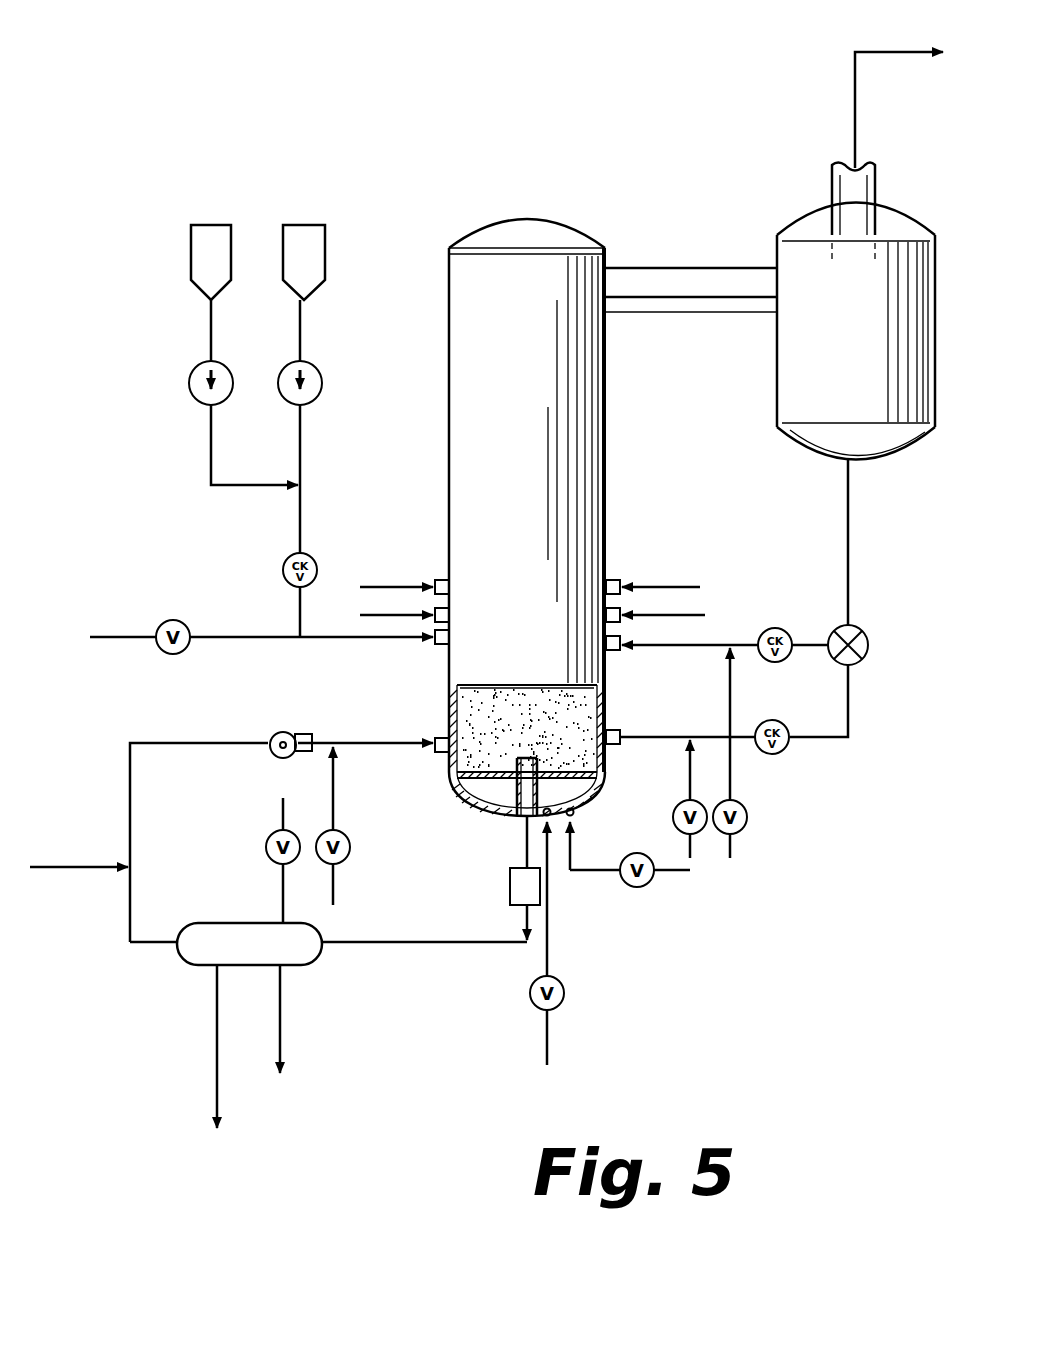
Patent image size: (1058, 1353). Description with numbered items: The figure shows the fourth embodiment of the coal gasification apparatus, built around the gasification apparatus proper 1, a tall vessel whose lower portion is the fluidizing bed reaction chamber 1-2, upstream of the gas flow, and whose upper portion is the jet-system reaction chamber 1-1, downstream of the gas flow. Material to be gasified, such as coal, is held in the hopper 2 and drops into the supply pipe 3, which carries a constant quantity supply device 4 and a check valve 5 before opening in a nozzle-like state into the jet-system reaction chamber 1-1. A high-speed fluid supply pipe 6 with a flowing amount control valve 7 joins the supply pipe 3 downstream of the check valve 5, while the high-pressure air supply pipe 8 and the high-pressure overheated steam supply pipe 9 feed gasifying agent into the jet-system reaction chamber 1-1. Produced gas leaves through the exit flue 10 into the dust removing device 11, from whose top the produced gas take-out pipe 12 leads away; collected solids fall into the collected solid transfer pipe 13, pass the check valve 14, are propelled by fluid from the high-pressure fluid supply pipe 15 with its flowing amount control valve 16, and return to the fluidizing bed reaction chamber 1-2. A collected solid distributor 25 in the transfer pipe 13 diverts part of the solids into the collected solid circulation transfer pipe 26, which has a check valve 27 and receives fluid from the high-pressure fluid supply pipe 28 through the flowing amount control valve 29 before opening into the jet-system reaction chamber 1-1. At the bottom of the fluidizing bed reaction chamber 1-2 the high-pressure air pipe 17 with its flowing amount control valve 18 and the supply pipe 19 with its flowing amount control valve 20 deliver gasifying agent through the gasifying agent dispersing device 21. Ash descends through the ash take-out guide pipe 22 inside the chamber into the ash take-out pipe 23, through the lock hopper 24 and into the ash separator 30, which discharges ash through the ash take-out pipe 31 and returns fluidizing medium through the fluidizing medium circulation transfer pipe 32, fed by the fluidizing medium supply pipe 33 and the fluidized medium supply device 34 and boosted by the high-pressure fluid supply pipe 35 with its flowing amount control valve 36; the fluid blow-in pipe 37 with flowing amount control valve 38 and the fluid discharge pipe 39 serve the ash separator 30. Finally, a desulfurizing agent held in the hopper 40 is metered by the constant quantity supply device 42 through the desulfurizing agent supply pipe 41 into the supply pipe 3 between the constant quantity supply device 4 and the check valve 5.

The gasification apparatus proper 1 is at (536, 217).
The jet-system reaction chamber 1-1 is at (525, 446).
The fluidizing bed reaction chamber 1-2 is at (482, 695).
The hopper 2 is at (325, 235).
The supply pipe 3 is at (302, 325).
The constant quantity supply device 4 is at (322, 383).
The check valve 5 is at (313, 556).
The high-speed fluid supply pipe 6 is at (260, 637).
The flowing amount control valve 7 is at (180, 620).
The high-pressure air supply pipe 8 is at (365, 612).
The high-pressure overheated steam supply pipe 9 is at (386, 586).
The exit flue 10 is at (726, 247).
The dust removing device 11 is at (912, 230).
The produced gas take-out pipe 12 is at (903, 52).
The collected solid transfer pipe 13 is at (850, 517).
The check valve 14 is at (788, 755).
The high-pressure fluid supply pipe 15 is at (688, 773).
The flowing amount control valve 16 is at (673, 820).
The high-pressure air pipe 17 is at (598, 877).
The flowing amount control valve 18 is at (646, 888).
The supply pipe 19 is at (548, 937).
The flowing amount control valve 20 is at (565, 993).
The gasifying agent dispersing device 21 is at (492, 800).
The ash take-out guide pipe 22 is at (532, 758).
The ash take-out pipe 23 is at (527, 848).
The lock hopper 24 is at (510, 900).
The collected solid distributor 25 is at (862, 635).
The collected solid circulation transfer pipe 26 is at (670, 660).
The check valve 27 is at (803, 615).
The high-pressure fluid supply pipe 28 is at (735, 690).
The flowing amount control valve 29 is at (748, 817).
The ash separator 30 is at (182, 962).
The ash take-out pipe 31 is at (215, 1065).
The fluidizing medium circulation transfer pipe 32 is at (410, 742).
The fluidizing medium supply pipe 33 is at (60, 870).
The fluidized medium supply device 34 is at (302, 725).
The high-pressure fluid supply pipe 35 is at (385, 638).
The flowing amount control valve 36 is at (352, 852).
The fluid blow-in pipe 37 is at (283, 898).
The flowing amount control valve 38 is at (266, 847).
The fluid discharge pipe 39 is at (283, 1010).
The hopper 40 is at (193, 242).
The desulfurizing agent supply pipe 41 is at (209, 325).
The constant quantity supply device 42 is at (187, 385).